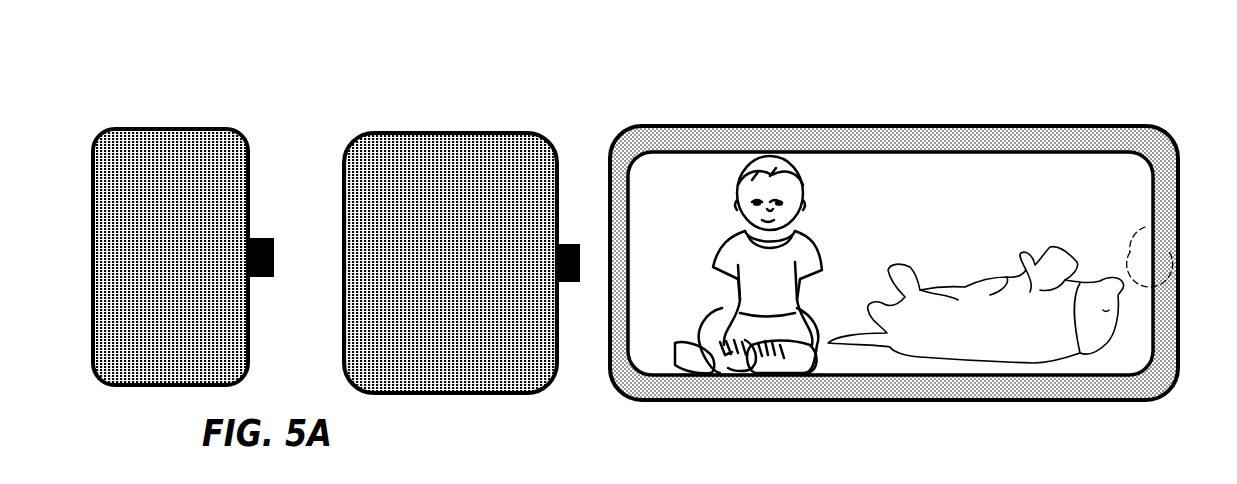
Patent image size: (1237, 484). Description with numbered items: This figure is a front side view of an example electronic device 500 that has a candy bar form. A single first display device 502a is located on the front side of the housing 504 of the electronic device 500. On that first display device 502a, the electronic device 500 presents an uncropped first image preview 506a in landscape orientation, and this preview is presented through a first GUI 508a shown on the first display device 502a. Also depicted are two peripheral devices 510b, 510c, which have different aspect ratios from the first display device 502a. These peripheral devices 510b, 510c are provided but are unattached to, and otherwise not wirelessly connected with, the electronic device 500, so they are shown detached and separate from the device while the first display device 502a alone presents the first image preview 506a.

The electronic device 500 is at (871, 214).
The first display device 502a is at (987, 148).
The housing 504 is at (738, 126).
The first image preview 506a is at (887, 183).
The first GUI 508a is at (845, 150).
The peripheral device 510b is at (473, 132).
The peripheral device 510c is at (168, 128).